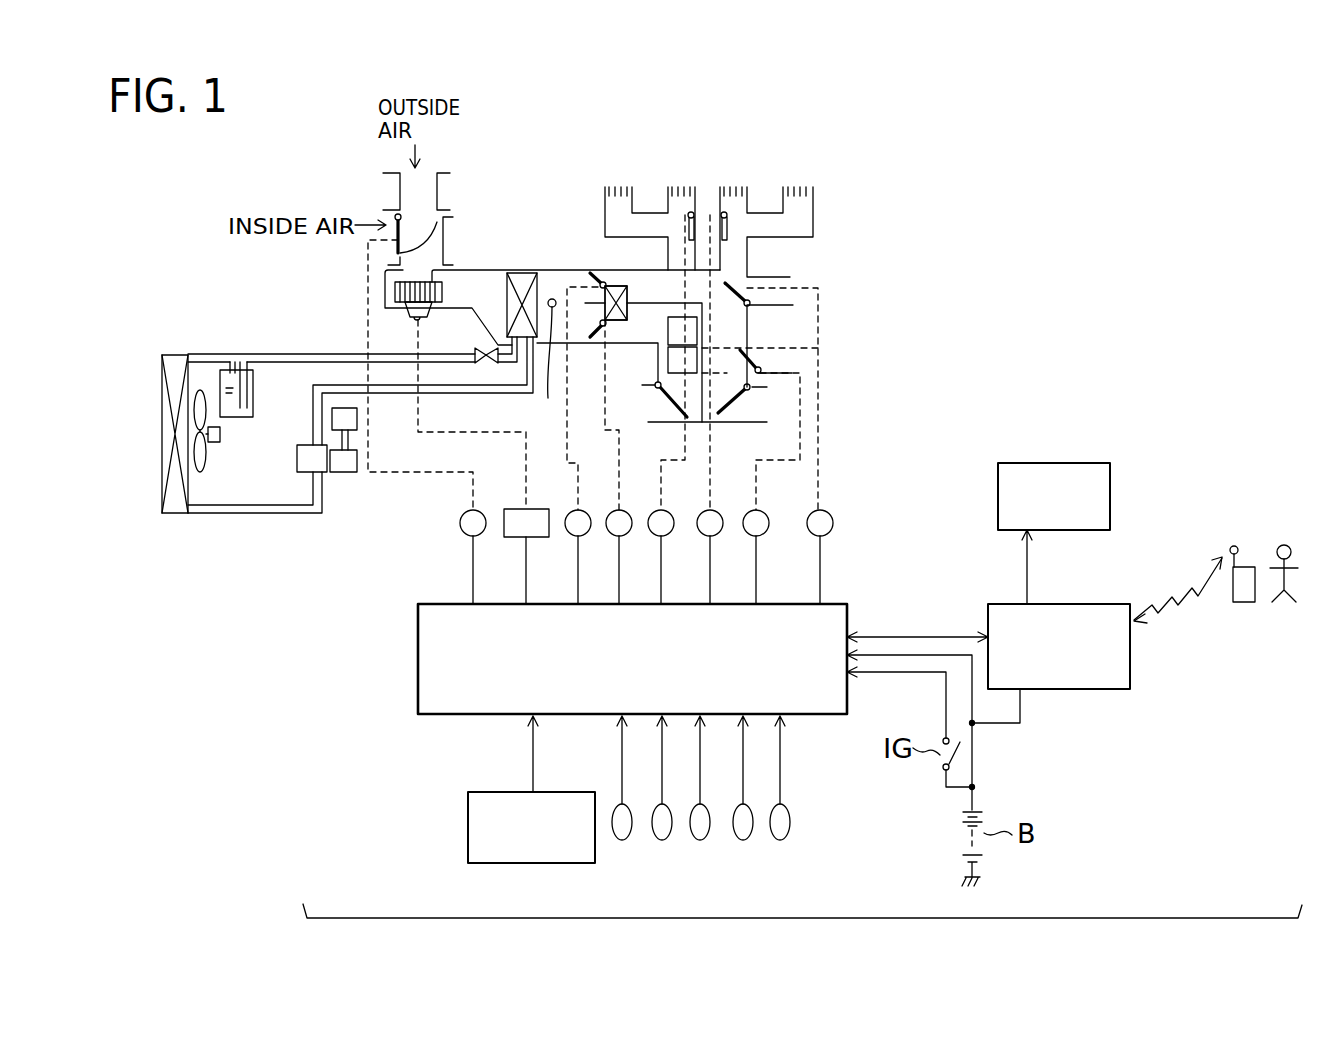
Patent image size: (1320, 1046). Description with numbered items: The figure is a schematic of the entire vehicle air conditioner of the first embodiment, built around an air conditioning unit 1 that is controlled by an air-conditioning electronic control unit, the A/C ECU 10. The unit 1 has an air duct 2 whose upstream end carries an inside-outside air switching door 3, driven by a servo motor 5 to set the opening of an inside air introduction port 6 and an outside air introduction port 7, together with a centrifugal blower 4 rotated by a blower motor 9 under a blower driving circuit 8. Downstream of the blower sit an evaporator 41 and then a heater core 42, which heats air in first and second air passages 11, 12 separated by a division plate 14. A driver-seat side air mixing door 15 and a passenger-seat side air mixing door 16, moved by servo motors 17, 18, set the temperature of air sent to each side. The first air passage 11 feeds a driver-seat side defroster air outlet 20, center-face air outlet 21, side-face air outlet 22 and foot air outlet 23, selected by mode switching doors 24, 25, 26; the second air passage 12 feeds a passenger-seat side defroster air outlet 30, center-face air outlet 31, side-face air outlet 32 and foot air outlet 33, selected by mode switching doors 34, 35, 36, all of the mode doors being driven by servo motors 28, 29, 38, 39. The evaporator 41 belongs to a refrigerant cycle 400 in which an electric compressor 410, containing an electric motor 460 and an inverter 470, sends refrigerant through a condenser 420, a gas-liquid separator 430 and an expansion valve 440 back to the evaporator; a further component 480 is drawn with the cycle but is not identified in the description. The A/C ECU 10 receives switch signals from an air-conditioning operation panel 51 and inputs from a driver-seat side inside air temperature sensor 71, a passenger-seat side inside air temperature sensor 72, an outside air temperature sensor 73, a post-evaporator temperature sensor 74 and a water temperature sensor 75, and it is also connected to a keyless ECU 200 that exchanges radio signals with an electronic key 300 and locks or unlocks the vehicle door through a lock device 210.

The air conditioning unit 1 is at (500, 176).
The air duct 2 is at (468, 268).
The inside-outside air switching door 3 is at (390, 246).
The blower 4 is at (395, 291).
The servo motor 5 is at (464, 532).
The inside air introduction port 6 is at (387, 217).
The outside air introduction port 7 is at (410, 178).
The blower driving circuit 8 is at (515, 526).
The blower motor 9 is at (417, 318).
The air-conditioning electronic control unit (A/C ECU) 10 is at (443, 714).
The first air passage 11 is at (653, 283).
The second air passage 12 is at (637, 330).
The division plate 14 is at (607, 287).
The driver-seat side air mixing door 15 is at (592, 278).
The passenger-seat side air mixing door 16 is at (600, 338).
The servo motor 17 is at (569, 532).
The servo motor 18 is at (611, 532).
The driver-seat side defroster air outlet 20 is at (788, 285).
The driver-seat side center-face air outlet 21 is at (733, 187).
The driver-seat side side-face air outlet 22 is at (797, 187).
The driver-seat side foot air outlet 23 is at (765, 410).
The driver-seat side air-outlet mode switching door 24 is at (745, 292).
The driver-seat side air-outlet mode switching door 25 is at (727, 223).
The driver-seat side air-outlet mode switching door 26 is at (735, 415).
The servo motor 28 is at (811, 532).
The servo motor 29 is at (701, 532).
The passenger-seat side defroster air outlet 30 is at (787, 357).
The passenger-seat side center-face air outlet 31 is at (677, 187).
The passenger-seat side side-face air outlet 32 is at (618, 187).
The passenger-seat side foot air outlet 33 is at (660, 410).
The passenger-seat side air-outlet mode switching door 34 is at (763, 352).
The passenger-seat side air-outlet mode switching door 35 is at (686, 228).
The passenger-seat side air-outlet mode switching door 36 is at (676, 418).
The servo motor 38 is at (747, 532).
The servo motor 39 is at (653, 532).
The evaporator 41 is at (517, 275).
The heater core 42 is at (618, 323).
The air-conditioning operation panel 51 is at (544, 841).
The driver-seat side inside air temperature sensor 71 is at (622, 840).
The passenger-seat side inside air temperature sensor 72 is at (662, 840).
The outside air temperature sensor 73 is at (700, 840).
The post-evaporator temperature sensor 74 is at (741, 866).
The water temperature sensor 75 is at (780, 840).
The keyless ECU 200 is at (1083, 690).
The lock device 210 is at (1078, 463).
The electronic key 300 is at (1242, 605).
The refrigerant cycle 400 is at (218, 336).
The electric compressor 410 is at (303, 472).
The condenser 420 is at (176, 508).
The gas-liquid separator 430 is at (262, 400).
The expansion valve 440 is at (485, 351).
The electric motor 460 is at (345, 472).
The inverter 470 is at (357, 418).
The cooling fan 480 is at (200, 470).